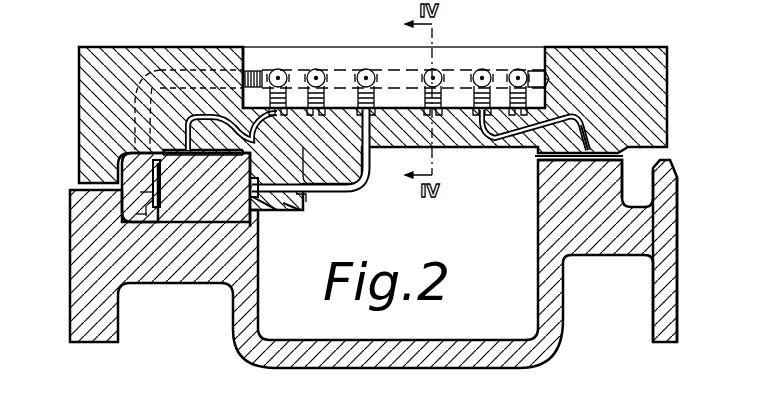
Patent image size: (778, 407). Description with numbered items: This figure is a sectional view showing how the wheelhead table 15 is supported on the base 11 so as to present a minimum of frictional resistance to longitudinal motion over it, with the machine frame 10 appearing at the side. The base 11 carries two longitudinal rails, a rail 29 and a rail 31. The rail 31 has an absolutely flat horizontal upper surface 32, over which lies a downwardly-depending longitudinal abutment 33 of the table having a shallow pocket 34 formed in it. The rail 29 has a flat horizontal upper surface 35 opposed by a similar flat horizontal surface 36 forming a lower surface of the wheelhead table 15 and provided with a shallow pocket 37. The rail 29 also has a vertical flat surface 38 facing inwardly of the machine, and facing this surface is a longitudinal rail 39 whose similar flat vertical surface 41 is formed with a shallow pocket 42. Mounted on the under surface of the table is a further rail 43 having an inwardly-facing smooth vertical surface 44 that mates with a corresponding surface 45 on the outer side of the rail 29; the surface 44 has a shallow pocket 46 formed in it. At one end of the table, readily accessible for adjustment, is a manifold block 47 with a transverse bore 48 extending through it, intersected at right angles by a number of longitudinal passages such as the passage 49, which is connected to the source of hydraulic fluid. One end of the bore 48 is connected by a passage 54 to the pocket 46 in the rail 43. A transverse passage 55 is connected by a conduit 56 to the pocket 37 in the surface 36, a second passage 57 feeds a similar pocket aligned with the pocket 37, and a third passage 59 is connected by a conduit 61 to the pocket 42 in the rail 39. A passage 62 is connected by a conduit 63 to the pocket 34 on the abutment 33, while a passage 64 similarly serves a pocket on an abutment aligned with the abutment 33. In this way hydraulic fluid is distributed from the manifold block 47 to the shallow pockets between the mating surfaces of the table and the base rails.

The side wall 10 is at (678, 257).
The base 11 is at (80, 299).
The wheelhead table 15 is at (90, 104).
The longitudinal rail 29 is at (153, 190).
The longitudinal rail 31 is at (604, 183).
The flat horizontal upper surface 32 is at (562, 157).
The longitudinal abutment 33 is at (672, 149).
The shallow pocket 34 is at (596, 148).
The flat horizontal upper surface 35 is at (186, 190).
The flat horizontal surface 36 is at (157, 152).
The shallow pocket 37 is at (186, 148).
The vertical flat surface 38 is at (252, 180).
The longitudinal rail 39 is at (305, 198).
The flat vertical surface 41 is at (272, 209).
The shallow pocket 42 is at (286, 206).
The rail 43 is at (141, 219).
The inwardly-facing smooth vertical surface 44 is at (150, 208).
The surface 45 is at (161, 168).
The shallow pocket 46 is at (140, 218).
The manifold block 47 is at (500, 57).
The transverse bore 48 is at (343, 69).
The longitudinal passage 49 is at (438, 68).
The passage 54 is at (164, 70).
The transverse passage 55 is at (278, 68).
The conduit 56 is at (307, 162).
The passage 57 is at (316, 68).
The passage 59 is at (367, 68).
The conduit 61 is at (369, 184).
The passage 62 is at (483, 68).
The conduit 63 is at (490, 146).
The passage 64 is at (522, 68).